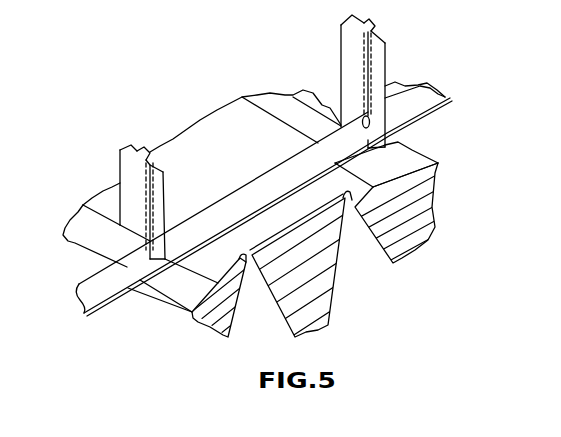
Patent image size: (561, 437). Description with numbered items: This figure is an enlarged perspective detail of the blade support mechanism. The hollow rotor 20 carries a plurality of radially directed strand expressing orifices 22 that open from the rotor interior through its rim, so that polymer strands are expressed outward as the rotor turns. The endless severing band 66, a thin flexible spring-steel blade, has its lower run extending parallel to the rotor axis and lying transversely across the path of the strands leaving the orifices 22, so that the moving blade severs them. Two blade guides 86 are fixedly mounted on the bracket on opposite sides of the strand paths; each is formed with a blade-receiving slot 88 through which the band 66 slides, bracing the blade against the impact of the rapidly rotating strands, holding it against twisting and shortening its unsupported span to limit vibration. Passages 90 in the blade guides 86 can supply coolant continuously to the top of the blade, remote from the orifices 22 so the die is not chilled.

The hollow rotor 20 is at (444, 206).
The strand expressing orifices 22 is at (246, 264).
The endless severing band 66 is at (429, 106).
The blade guides 86 is at (131, 196).
The blade-receiving slots 88 is at (136, 252).
The passages 90 is at (145, 158).